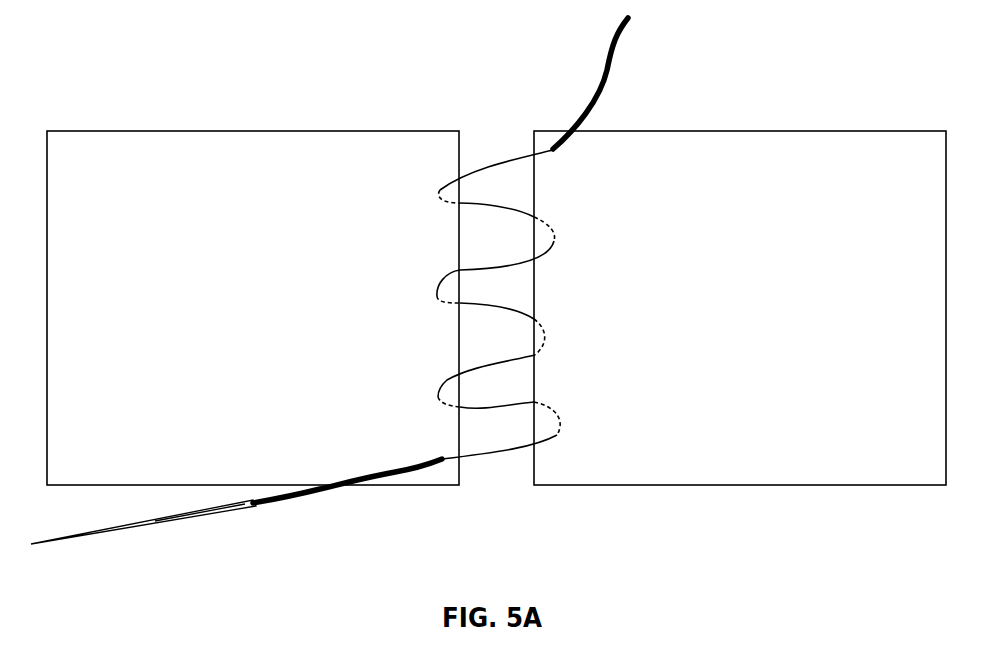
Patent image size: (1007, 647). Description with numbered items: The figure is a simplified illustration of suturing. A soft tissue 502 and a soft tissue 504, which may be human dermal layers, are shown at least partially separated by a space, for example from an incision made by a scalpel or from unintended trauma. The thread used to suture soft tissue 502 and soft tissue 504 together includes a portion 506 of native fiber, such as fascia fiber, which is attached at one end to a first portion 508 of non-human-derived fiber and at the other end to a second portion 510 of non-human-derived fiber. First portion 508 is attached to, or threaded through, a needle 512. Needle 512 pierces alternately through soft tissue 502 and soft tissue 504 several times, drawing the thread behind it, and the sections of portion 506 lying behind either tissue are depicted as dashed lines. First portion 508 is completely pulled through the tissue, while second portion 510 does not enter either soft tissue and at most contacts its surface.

The soft tissue 502 is at (220, 131).
The soft tissue 504 is at (723, 131).
The portion of native fiber 506 is at (555, 241).
The first portion of non-human-derived fiber 508 is at (312, 488).
The second portion of non-human-derived fiber 510 is at (607, 82).
The needle 512 is at (150, 524).